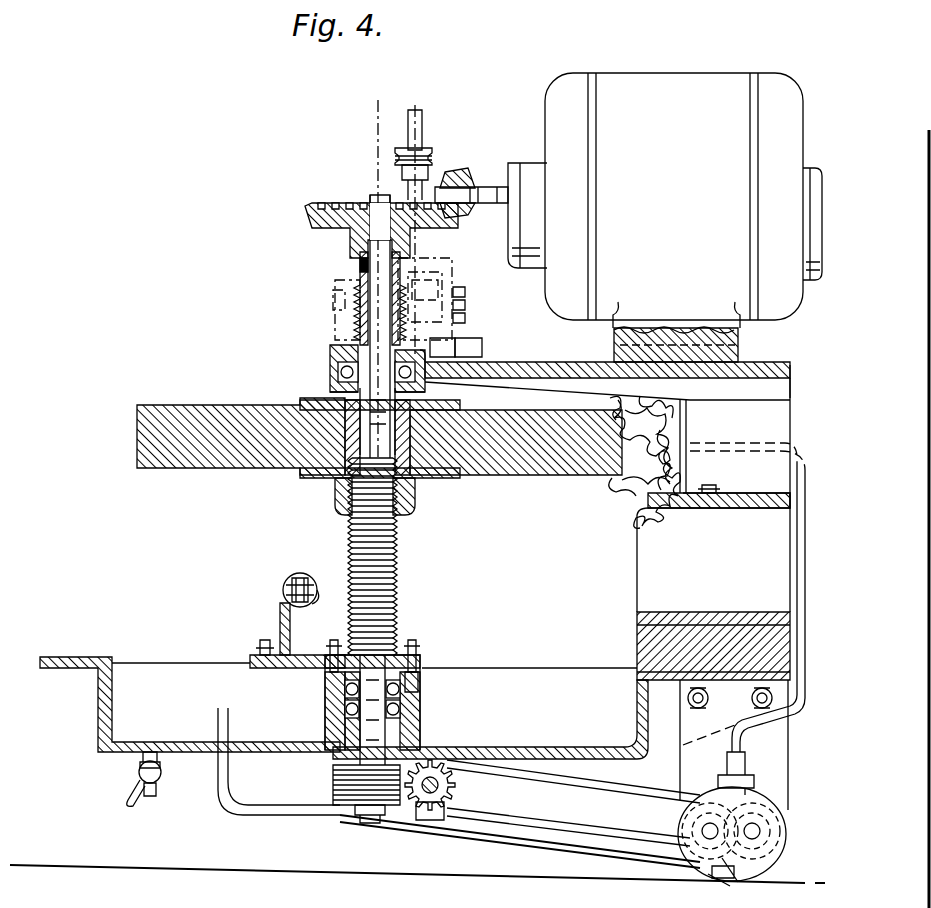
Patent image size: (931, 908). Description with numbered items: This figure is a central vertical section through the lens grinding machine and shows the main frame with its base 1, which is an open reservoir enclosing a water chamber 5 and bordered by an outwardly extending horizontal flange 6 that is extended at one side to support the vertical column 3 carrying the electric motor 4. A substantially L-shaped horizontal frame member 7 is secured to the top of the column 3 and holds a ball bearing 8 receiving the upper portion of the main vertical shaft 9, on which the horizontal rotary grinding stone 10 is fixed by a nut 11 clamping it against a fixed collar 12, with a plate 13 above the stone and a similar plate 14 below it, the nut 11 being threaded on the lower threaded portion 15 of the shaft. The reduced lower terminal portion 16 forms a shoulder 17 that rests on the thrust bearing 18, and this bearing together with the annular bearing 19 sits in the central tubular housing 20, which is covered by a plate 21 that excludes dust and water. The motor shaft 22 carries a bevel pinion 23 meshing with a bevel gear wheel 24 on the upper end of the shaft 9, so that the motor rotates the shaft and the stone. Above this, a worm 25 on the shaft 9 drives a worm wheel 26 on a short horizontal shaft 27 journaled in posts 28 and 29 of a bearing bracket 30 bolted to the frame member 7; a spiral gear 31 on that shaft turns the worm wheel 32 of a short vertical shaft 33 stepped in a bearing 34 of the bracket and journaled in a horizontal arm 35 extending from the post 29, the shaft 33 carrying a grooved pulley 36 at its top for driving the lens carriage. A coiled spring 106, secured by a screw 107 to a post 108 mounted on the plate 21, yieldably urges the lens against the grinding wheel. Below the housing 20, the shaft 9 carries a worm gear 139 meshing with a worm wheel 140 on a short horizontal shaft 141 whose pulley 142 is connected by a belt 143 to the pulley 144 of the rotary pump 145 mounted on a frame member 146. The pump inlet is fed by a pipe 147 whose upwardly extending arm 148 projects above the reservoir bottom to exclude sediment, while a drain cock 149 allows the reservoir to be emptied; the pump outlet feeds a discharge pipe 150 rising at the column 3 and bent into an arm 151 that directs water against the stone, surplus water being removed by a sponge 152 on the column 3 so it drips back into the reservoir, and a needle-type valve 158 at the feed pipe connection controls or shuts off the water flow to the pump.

The base 1 is at (100, 706).
The vertical column 3 is at (656, 572).
The electric motor 4 is at (665, 217).
The water chamber 5 is at (530, 200).
The horizontal flange 6 is at (640, 648).
The horizontal frame member 7 is at (533, 372).
The ball bearing 8 is at (335, 362).
The main vertical shaft 9 is at (376, 200).
The rotary grinding stone 10 is at (150, 452).
The nut 11 is at (335, 495).
The fixed collar 12 is at (340, 398).
The plate 13 is at (458, 405).
The plate 14 is at (438, 478).
The lower threaded portion 15 is at (396, 578).
The lower terminal portion 16 is at (330, 722).
The shoulder 17 is at (420, 674).
The thrust bearing 18 is at (420, 692).
The annular bearing 19 is at (420, 712).
The tubular housing 20 is at (332, 696).
The plate 21 is at (404, 656).
The motor shaft 22 is at (490, 192).
The bevel pinion 23 is at (458, 176).
The bevel gear wheel 24 is at (312, 204).
The worm 25 is at (360, 326).
The worm wheel 26 is at (362, 292).
The short horizontal shaft 27 is at (466, 300).
The post 28 is at (340, 284).
The post 29 is at (456, 334).
The bearing bracket 30 is at (474, 354).
The spiral gear 31 is at (466, 318).
The worm wheel 32 is at (446, 282).
The short vertical shaft 33 is at (420, 112).
The bearing 34 is at (444, 346).
The horizontal arm 35 is at (430, 262).
The grooved pulley 36 is at (432, 152).
The coiled spring 106 is at (302, 572).
The screw 107 is at (318, 596).
The post 108 is at (280, 618).
The worm gear 139 is at (334, 786).
The worm wheel 140 is at (486, 796).
The short horizontal shaft 141 is at (440, 783).
The pulley 142 is at (424, 808).
The belt 143 is at (500, 824).
The pulley 144 is at (700, 832).
The rotary pump 145 is at (758, 800).
The frame member 146 is at (688, 760).
The feed pipe 147 is at (614, 868).
The upwardly extending arm 148 is at (229, 780).
The drain cock 149 is at (138, 770).
The discharge pipe 150 is at (746, 742).
The arm 151 is at (716, 445).
The sponge 152 is at (622, 492).
The valve 158 is at (720, 870).